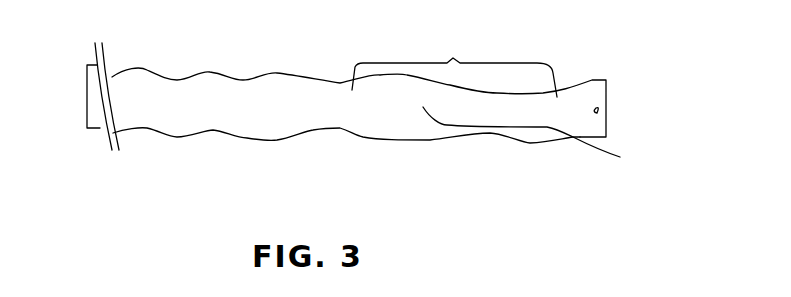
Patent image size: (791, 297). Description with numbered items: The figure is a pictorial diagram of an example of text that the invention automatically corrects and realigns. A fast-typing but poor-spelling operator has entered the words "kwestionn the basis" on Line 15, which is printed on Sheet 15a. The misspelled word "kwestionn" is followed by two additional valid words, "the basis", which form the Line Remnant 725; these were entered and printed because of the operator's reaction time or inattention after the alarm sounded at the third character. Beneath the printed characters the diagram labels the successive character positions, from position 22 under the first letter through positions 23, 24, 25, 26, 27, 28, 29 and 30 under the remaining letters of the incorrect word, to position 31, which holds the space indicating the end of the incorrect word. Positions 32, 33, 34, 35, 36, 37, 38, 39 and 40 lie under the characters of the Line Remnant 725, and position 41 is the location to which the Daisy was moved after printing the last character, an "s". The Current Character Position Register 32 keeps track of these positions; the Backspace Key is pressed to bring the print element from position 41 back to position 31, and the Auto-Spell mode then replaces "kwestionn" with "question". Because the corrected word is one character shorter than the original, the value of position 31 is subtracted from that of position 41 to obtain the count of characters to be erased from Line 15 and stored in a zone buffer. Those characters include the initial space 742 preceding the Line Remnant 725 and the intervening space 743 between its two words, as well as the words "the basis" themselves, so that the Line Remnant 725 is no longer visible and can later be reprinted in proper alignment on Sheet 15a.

The Line 15 is at (555, 107).
The Sheet 15a is at (597, 110).
The space 742 is at (335, 103).
The Line Remnant 725 is at (454, 66).
The space 743 is at (541, 139).
The character position 22 is at (129, 131).
The character position 23 is at (149, 141).
The character position 24 is at (173, 131).
The character position 25 is at (199, 141).
The character position 26 is at (221, 131).
The character position 27 is at (245, 141).
The character position 28 is at (267, 131).
The character position 29 is at (292, 141).
The character position 30 is at (316, 131).
The position 31 is at (340, 181).
The Current Character Position Register 32 is at (623, 200).
The character position 33 is at (387, 141).
The character position 34 is at (410, 131).
The character position 35 is at (440, 181).
The character position 36 is at (454, 131).
The character position 37 is at (480, 141).
The character position 38 is at (507, 131).
The character position 39 is at (530, 141).
The character position 40 is at (547, 131).
The position 41 is at (577, 181).